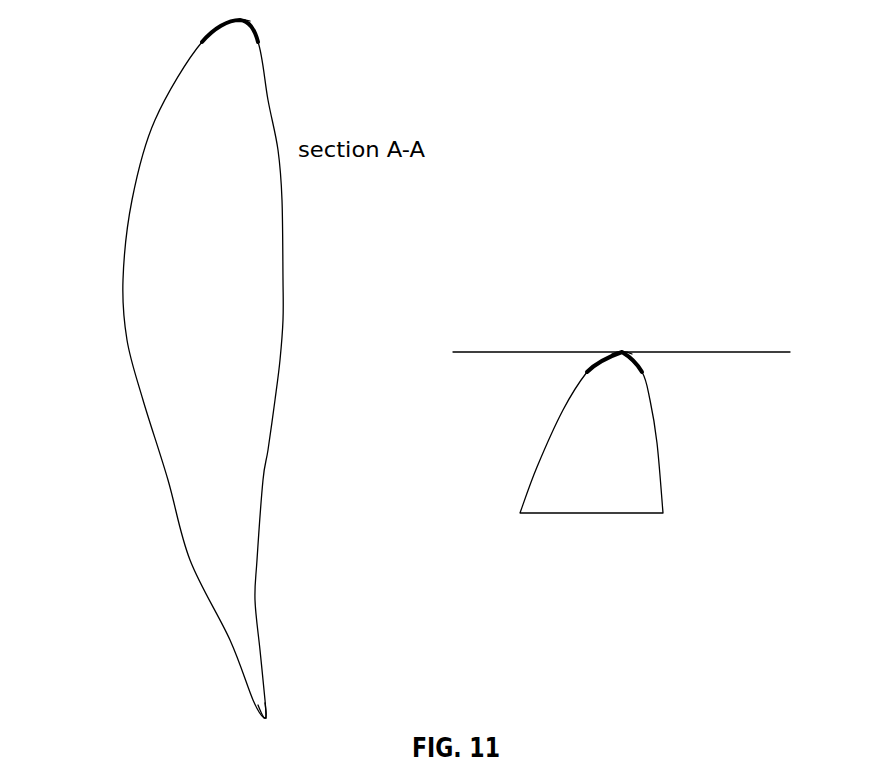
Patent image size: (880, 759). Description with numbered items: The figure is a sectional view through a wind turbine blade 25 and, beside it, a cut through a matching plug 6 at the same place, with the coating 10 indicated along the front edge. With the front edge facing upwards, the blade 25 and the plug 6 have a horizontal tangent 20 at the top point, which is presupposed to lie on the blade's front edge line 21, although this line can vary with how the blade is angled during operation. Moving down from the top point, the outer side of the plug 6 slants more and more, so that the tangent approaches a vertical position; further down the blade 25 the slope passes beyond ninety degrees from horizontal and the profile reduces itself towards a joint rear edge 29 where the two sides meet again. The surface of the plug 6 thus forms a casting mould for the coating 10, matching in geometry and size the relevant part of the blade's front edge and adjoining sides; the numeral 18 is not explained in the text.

The plug 6 is at (595, 452).
The coating 10 is at (258, 42).
The blade section 18 is at (701, 753).
The horizontal tangent 20 is at (760, 350).
The front edge line 21 is at (238, 26).
The wind turbine blade 25 is at (143, 183).
The joint rear edge 29 is at (268, 712).